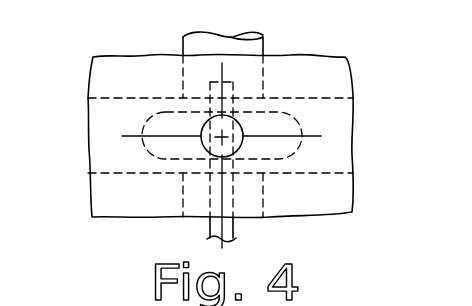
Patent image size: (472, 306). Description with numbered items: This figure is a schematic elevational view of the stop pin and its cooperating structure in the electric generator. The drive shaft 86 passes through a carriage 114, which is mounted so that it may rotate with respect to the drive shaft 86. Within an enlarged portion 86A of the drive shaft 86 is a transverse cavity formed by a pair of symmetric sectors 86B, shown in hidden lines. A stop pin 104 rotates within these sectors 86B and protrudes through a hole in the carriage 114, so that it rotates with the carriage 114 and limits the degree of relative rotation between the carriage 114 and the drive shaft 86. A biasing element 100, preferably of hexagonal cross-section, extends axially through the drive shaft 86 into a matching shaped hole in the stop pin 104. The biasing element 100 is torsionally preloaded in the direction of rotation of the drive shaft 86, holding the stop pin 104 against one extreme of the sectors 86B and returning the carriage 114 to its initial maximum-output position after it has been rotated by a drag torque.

The carriage 114 is at (155, 53).
The drive shaft 86 is at (263, 47).
The enlarged portion of drive shaft 86A is at (107, 100).
The symmetric sectors 86B is at (140, 144).
The stop pin 104 is at (240, 134).
The biasing element 100 is at (235, 226).